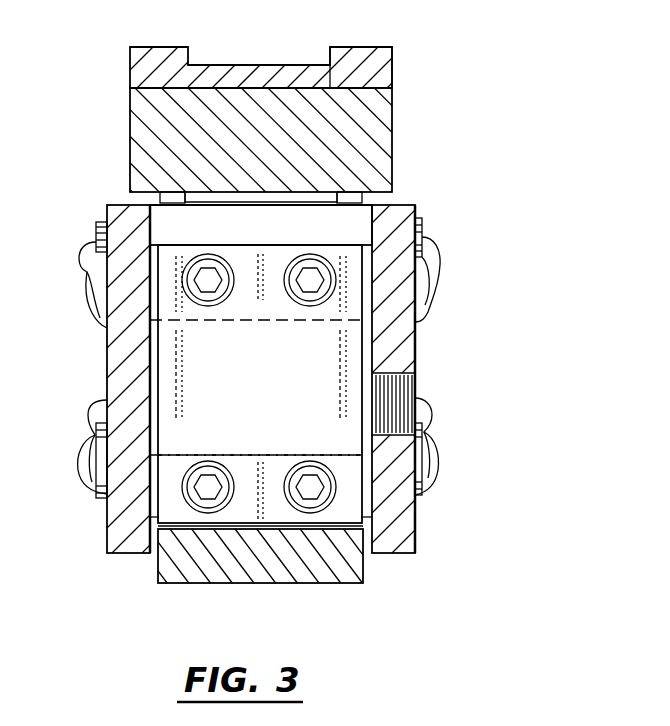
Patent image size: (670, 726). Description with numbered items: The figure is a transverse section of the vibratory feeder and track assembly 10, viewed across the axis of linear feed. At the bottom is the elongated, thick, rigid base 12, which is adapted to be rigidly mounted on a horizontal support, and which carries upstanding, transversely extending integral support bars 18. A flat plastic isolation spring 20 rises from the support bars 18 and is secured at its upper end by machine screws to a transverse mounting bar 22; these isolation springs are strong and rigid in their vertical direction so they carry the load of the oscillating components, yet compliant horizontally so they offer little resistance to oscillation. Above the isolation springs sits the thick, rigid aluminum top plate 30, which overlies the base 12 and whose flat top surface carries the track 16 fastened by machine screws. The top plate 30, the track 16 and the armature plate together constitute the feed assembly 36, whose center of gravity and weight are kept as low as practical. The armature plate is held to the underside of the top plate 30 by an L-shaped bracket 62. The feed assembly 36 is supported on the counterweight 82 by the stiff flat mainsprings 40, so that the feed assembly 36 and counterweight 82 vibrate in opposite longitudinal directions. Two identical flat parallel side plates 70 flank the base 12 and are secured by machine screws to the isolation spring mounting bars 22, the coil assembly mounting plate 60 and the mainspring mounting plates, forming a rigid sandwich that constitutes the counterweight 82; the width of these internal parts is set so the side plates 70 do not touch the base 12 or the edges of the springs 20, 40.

The vibratory feeder and track assembly 10 is at (498, 112).
The base 12 is at (204, 586).
The track 16 is at (156, 46).
The support bars 18 is at (254, 452).
The isolation springs 20 is at (268, 372).
The mounting bars 22 is at (236, 245).
The top plate 30 is at (130, 134).
The feed assembly 36 is at (399, 67).
The mainsprings 40 is at (162, 200).
The coil assembly mounting plate 60 is at (207, 234).
The L-shaped bracket 62 is at (298, 200).
The side plates 70 is at (107, 522).
The counterweight 82 is at (436, 221).